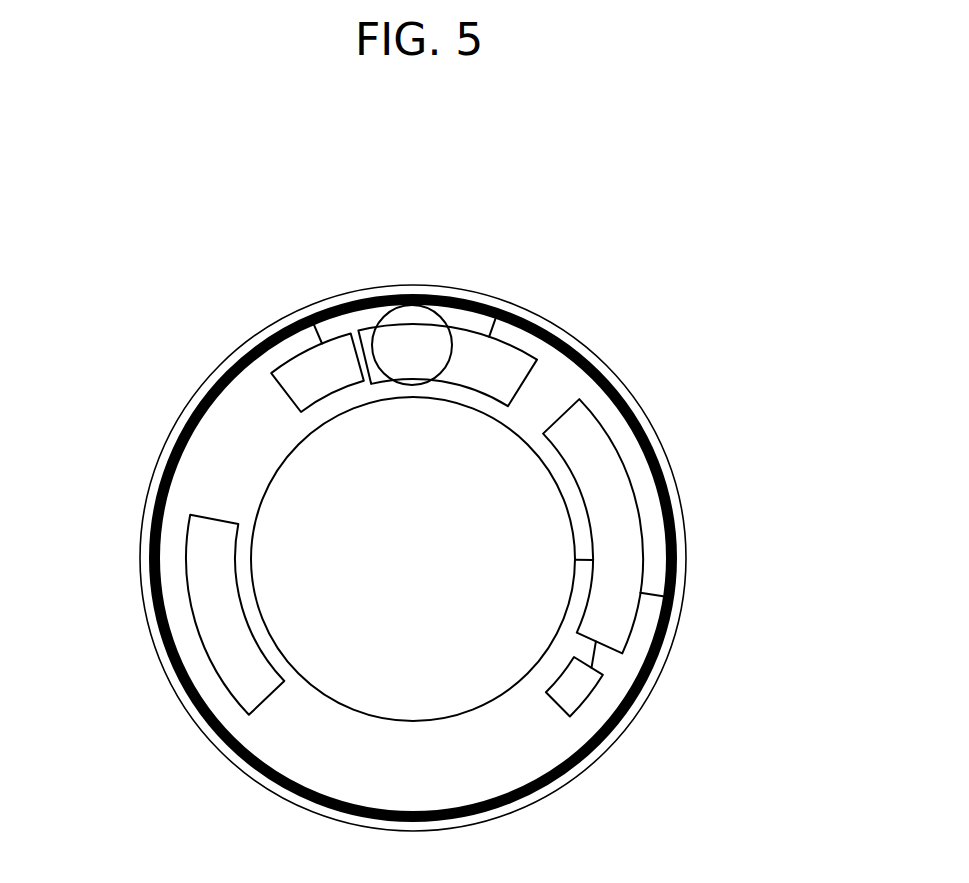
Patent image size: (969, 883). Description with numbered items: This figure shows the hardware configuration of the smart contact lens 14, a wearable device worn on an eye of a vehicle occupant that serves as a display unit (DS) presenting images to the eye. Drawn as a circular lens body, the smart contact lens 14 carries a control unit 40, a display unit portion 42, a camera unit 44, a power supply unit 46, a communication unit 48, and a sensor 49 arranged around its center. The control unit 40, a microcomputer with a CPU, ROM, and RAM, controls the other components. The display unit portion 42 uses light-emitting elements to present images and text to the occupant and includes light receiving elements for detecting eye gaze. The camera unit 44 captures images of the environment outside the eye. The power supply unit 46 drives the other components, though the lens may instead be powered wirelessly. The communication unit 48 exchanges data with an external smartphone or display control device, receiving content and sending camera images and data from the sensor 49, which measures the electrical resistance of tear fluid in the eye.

The smart contact lens 14 is at (727, 208).
The control unit 40 is at (627, 533).
The display unit portion 42 is at (302, 503).
The camera unit 44 is at (440, 321).
The power supply unit 46 is at (312, 377).
The communication unit 48 is at (207, 590).
The sensor 49 is at (572, 690).